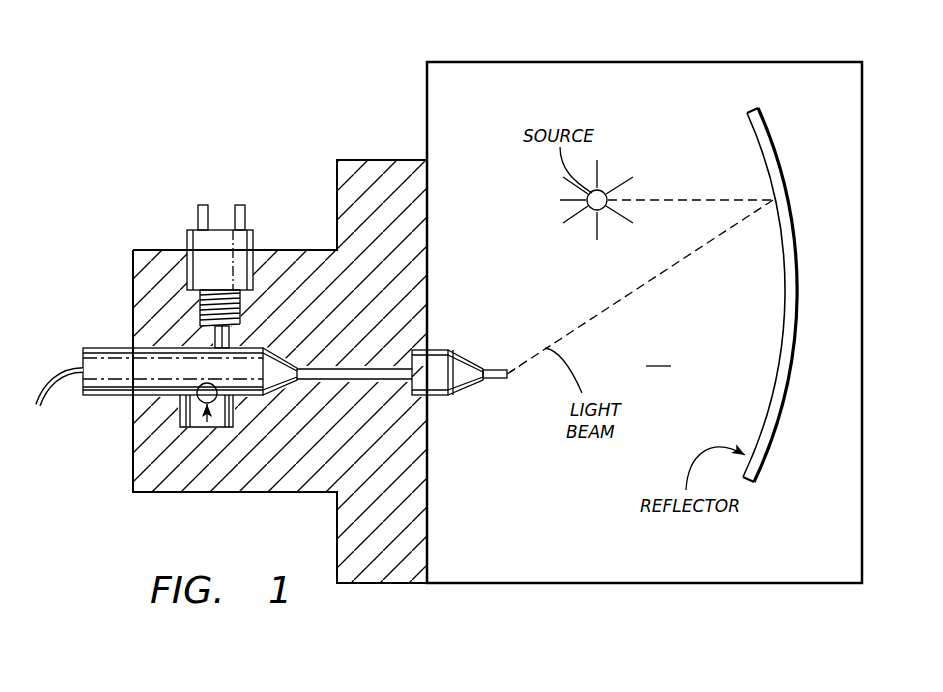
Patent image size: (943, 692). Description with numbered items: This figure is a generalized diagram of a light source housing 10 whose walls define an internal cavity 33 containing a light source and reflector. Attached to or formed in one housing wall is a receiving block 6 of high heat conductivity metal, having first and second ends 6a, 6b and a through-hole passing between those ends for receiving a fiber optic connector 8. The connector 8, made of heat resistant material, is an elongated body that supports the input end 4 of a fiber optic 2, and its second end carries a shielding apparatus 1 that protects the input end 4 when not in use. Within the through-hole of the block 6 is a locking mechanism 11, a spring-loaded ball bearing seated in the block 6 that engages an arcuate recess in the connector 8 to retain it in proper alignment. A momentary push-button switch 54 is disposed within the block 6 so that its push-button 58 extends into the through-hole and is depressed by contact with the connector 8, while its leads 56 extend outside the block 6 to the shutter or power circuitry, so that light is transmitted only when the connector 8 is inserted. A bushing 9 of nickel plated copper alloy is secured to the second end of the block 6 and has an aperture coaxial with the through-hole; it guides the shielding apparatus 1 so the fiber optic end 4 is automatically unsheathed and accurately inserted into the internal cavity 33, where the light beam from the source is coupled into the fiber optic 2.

The shielding apparatus 1 is at (310, 405).
The fiber optic 2 is at (70, 368).
The input end 4 is at (494, 391).
The receiving block 6 is at (276, 329).
The first end of receiving block 6a is at (276, 329).
The second end of receiving block 6b is at (400, 138).
The fiber optic connector 8 is at (117, 372).
The bushing 9 is at (433, 350).
The light source housing 10 is at (402, 66).
The locking mechanism 11 is at (199, 413).
The internal cavity 33 is at (659, 355).
The push-button switch 54 is at (166, 244).
The leads 56 is at (203, 205).
The push-button 58 is at (217, 343).